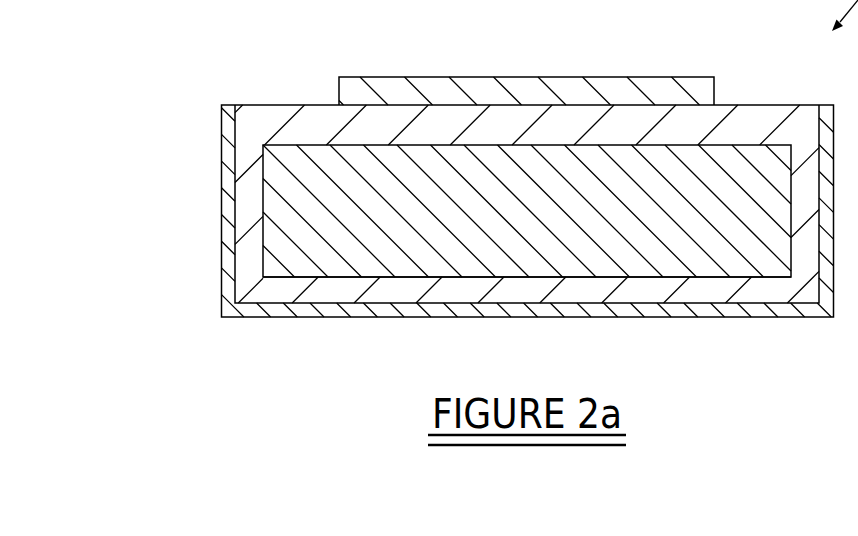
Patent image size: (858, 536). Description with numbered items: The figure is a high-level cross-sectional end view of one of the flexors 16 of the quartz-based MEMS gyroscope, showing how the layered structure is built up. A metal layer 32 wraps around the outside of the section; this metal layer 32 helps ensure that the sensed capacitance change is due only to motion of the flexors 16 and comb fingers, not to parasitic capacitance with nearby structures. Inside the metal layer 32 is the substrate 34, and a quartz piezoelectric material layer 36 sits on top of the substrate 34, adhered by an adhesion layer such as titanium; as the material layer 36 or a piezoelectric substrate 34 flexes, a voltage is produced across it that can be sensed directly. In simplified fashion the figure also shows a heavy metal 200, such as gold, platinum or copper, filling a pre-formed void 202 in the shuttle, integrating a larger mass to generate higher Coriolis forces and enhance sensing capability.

The flexor 16 is at (207, 210).
The metal layer 32 is at (221, 123).
The substrate 34 is at (271, 105).
The piezoelectric material layer 36 is at (653, 90).
The heavy metal 200 is at (425, 253).
The void 202 is at (346, 278).